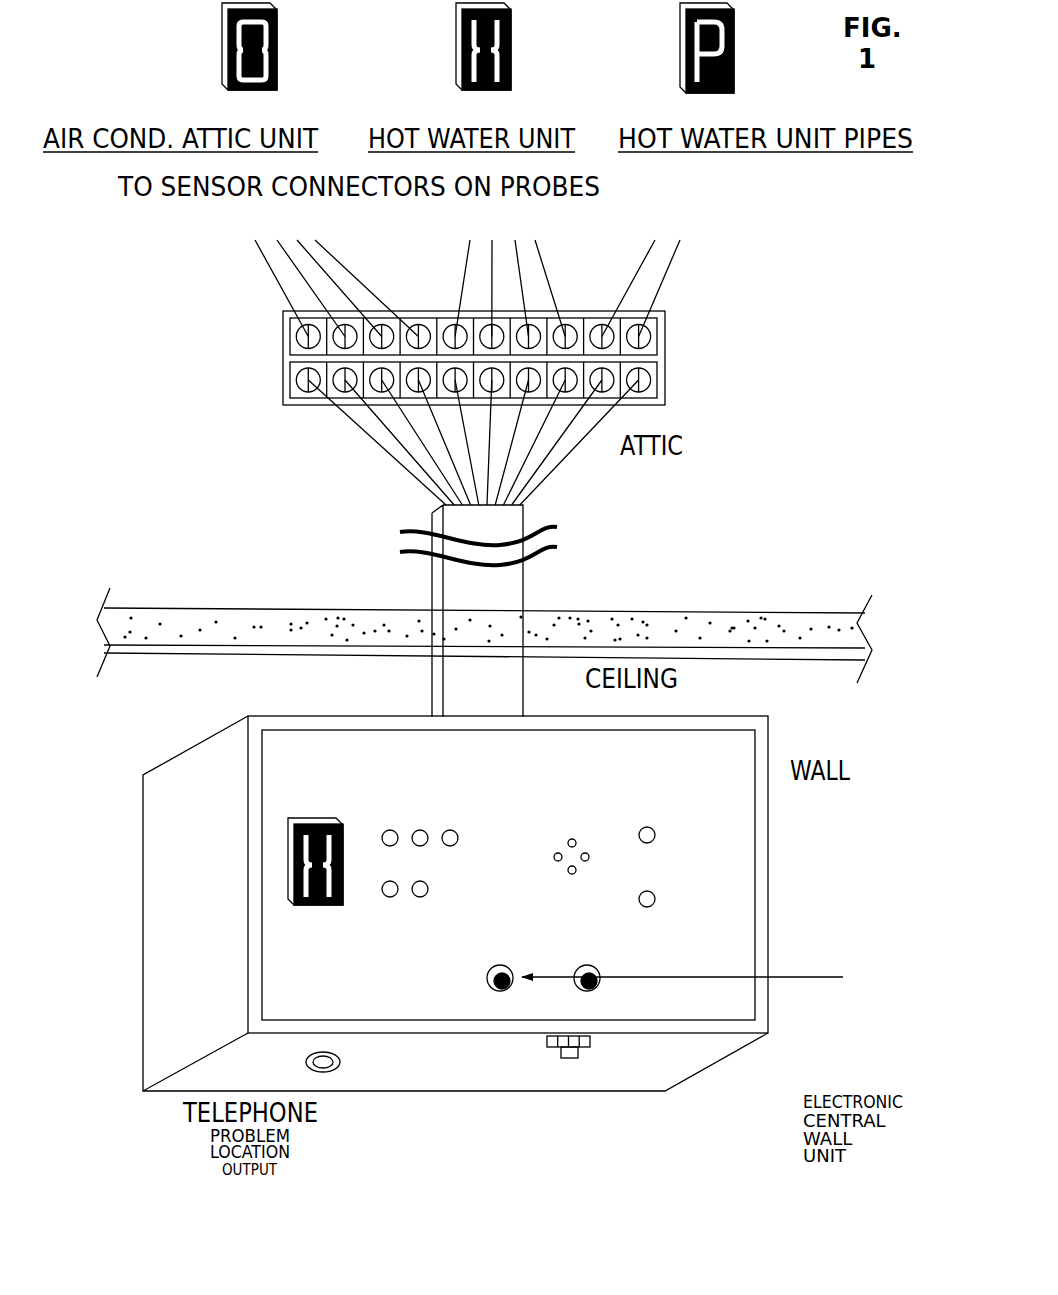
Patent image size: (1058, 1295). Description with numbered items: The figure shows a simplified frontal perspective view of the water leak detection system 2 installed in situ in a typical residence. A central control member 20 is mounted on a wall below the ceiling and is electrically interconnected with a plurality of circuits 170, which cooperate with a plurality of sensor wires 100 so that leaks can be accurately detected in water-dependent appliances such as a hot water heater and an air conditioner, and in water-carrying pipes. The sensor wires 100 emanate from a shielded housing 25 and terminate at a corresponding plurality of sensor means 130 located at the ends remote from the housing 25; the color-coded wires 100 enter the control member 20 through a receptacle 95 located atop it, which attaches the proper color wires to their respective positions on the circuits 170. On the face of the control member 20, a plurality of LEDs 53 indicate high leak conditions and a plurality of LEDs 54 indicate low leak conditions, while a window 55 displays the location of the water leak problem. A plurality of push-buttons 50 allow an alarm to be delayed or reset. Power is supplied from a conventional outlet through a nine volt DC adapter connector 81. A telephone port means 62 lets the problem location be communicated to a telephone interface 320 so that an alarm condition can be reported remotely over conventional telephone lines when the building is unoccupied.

The water leak detection system 2 is at (467, 358).
The central control member 20 is at (457, 928).
The shielded housing 25 is at (483, 611).
The plurality of push-buttons 50 is at (516, 930).
The plurality of LEDs 53 is at (458, 820).
The plurality of LEDs 54 is at (423, 873).
The window 55 is at (282, 857).
The telephone port means 62 is at (332, 1074).
The 9v DC adapter connector 81 is at (568, 1065).
The receptacle 95 is at (418, 705).
The plurality of sensor wires 100 is at (444, 288).
The plurality of sensor means 130 is at (647, 255).
The plurality of circuits 170 is at (268, 346).
The telephone interface 320 is at (456, 392).